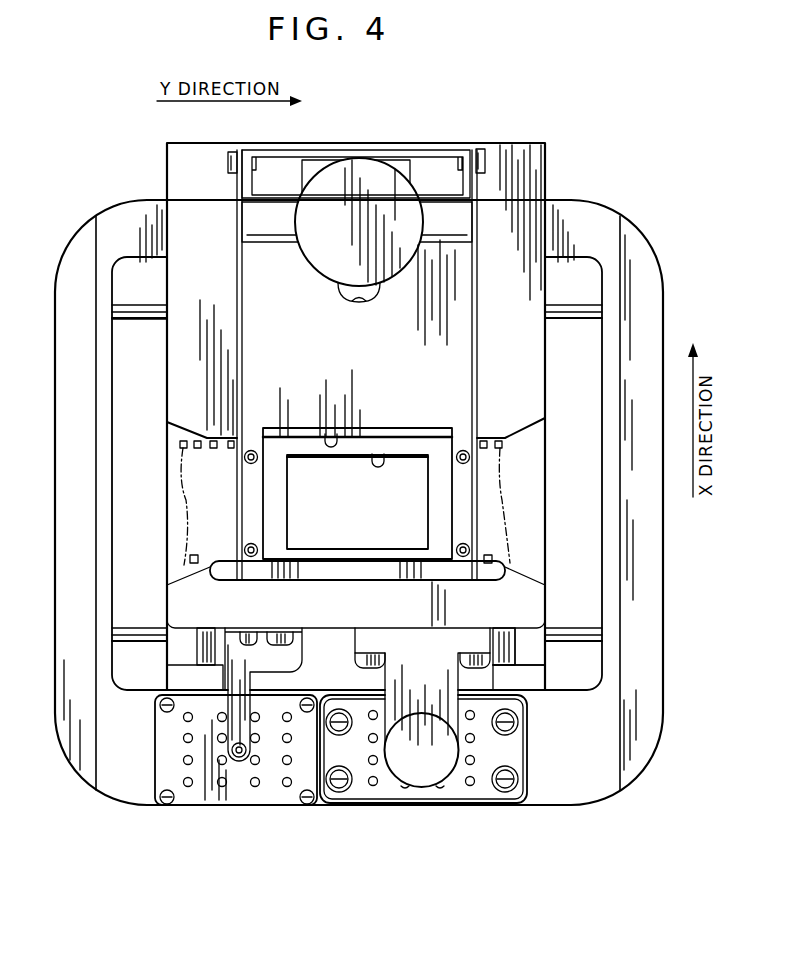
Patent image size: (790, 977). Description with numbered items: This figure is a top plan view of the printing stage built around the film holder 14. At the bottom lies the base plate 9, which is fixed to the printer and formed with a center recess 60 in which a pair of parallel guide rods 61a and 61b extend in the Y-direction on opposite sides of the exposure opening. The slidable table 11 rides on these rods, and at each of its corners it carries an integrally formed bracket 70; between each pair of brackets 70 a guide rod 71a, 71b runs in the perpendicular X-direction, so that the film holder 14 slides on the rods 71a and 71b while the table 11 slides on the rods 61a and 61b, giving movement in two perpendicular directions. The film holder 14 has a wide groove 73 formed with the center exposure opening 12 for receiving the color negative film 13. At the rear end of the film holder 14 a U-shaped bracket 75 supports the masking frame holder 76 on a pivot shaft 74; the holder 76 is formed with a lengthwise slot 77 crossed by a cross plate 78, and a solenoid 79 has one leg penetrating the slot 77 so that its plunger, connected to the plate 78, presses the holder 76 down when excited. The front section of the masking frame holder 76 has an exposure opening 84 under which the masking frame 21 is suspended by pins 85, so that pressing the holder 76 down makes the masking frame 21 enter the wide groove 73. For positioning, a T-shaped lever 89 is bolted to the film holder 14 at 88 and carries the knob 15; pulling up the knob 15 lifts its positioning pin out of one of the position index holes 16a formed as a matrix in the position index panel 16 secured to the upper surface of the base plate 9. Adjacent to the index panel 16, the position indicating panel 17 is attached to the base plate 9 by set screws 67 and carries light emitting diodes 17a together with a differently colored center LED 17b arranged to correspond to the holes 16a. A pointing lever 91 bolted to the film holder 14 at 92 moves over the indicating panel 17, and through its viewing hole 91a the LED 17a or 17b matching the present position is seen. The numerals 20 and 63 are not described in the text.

The base plate 9 is at (138, 214).
The center recess 60 is at (118, 416).
The slidable table 11 is at (533, 650).
The guide rod 61a is at (141, 628).
The guide rod 61b is at (145, 322).
The masking frame holder 76 is at (455, 313).
The film holder 14 is at (528, 408).
The U-shaped bracket 75 is at (358, 143).
The solenoid 79 is at (388, 175).
The pivot shaft 74 is at (486, 157).
The cross plate 78 is at (274, 224).
The slot 77 is at (366, 302).
The masking frame 21 is at (270, 440).
The center exposure opening 12 is at (364, 517).
The exposure opening 84 is at (331, 436).
The slot 20 is at (378, 456).
The pins 85 is at (246, 547).
The wide groove 73 is at (530, 460).
The color negative film 13 is at (490, 505).
The guide rod 71a is at (206, 630).
The guide rod 71b is at (506, 630).
The bracket 70 is at (175, 672).
The pointing lever 91 is at (288, 665).
The bolt location 92 is at (294, 630).
The viewing hole 91a is at (239, 759).
The T-shaped lever 89 is at (403, 645).
The bolt location 88 is at (468, 652).
The knob 15 is at (421, 789).
The position indicating panel 17 is at (207, 806).
The set screws 67 is at (167, 806).
The light emitting diodes 17a is at (183, 740).
The center LED 17b is at (260, 738).
The position index panel 16 is at (450, 804).
The screws 63 is at (506, 793).
The position index holes 16a is at (373, 786).